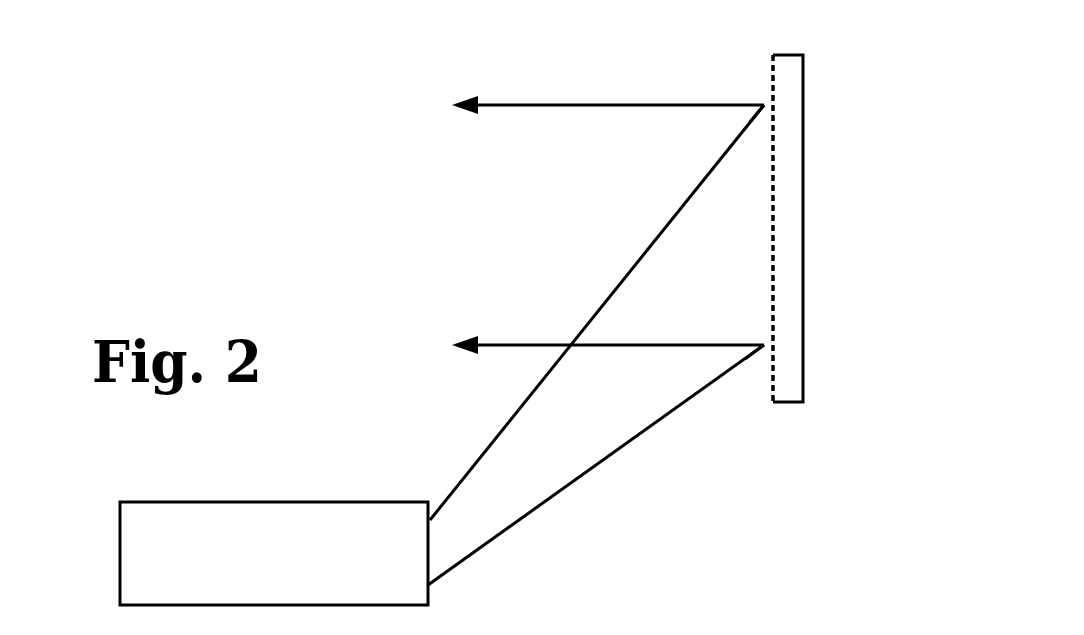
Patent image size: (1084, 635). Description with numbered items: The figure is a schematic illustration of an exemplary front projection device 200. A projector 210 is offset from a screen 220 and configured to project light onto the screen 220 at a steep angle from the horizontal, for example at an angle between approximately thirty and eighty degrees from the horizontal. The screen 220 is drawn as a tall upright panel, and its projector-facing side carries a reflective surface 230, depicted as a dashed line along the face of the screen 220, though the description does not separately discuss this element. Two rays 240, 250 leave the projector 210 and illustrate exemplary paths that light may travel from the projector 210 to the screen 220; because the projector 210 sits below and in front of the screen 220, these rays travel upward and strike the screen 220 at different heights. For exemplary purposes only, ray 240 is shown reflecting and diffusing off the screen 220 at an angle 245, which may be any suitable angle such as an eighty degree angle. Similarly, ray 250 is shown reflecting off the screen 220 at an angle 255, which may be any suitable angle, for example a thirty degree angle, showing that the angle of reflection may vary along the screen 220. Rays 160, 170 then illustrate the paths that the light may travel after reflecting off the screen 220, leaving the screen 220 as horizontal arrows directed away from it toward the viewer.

The ray 160 is at (538, 106).
The ray 170 is at (548, 343).
The front projection device 200 is at (852, 88).
The projector 210 is at (350, 502).
The screen 220 is at (803, 257).
The reflective surface of screen 230 is at (773, 73).
The ray 240 is at (540, 385).
The angle 245 is at (734, 117).
The ray 250 is at (545, 505).
The angle 255 is at (756, 327).